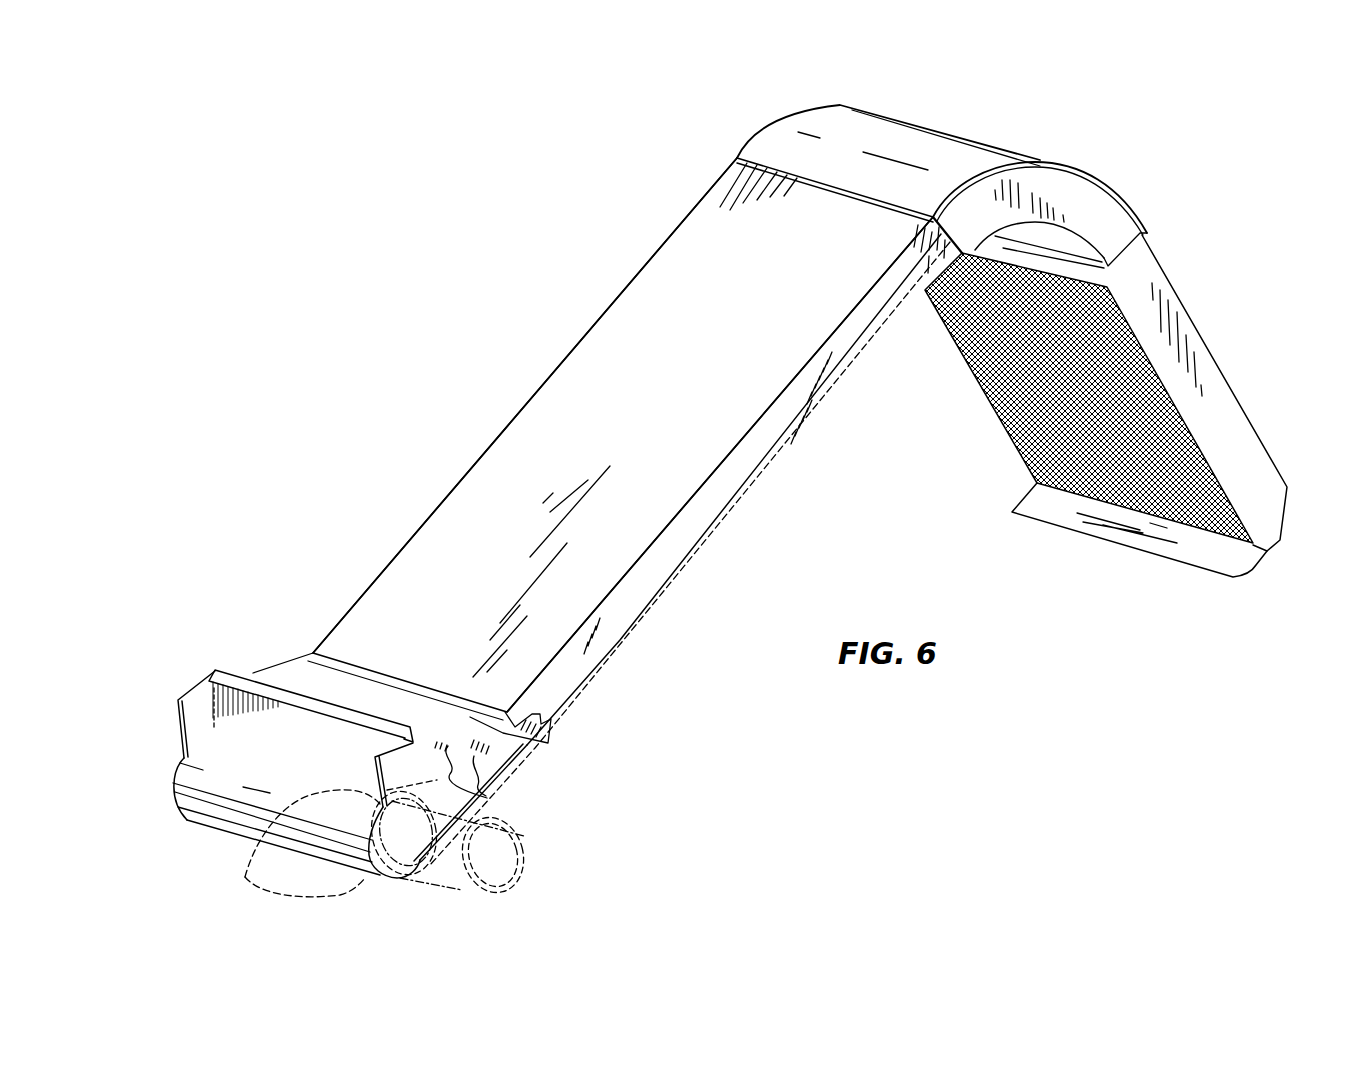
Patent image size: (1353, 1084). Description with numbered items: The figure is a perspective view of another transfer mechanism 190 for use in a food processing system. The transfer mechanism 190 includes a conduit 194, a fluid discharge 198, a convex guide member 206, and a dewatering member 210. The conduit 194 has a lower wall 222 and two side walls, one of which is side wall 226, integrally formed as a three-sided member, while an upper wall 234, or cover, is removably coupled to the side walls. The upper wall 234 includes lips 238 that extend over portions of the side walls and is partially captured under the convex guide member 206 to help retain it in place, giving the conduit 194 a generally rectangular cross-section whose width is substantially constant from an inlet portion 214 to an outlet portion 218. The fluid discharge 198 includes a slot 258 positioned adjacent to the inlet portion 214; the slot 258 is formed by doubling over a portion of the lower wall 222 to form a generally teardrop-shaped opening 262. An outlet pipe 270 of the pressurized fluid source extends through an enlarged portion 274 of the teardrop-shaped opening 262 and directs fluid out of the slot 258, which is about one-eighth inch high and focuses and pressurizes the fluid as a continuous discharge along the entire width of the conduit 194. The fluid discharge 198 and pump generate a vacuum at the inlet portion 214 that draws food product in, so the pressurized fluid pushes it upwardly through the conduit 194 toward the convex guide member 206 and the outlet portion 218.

The transfer mechanism 190 is at (1072, 124).
The conduit 194 is at (606, 340).
The fluid discharge 198 is at (398, 882).
The convex guide member 206 is at (808, 128).
The dewatering member 210 is at (1217, 404).
The inlet portion 214 is at (217, 748).
The outlet portion 218 is at (887, 223).
The lower wall 222 is at (505, 741).
The side wall 226 is at (798, 412).
The upper wall 234 is at (419, 552).
The lip 238 is at (643, 562).
The slot 258 is at (519, 740).
The teardrop-shaped opening 262 is at (295, 843).
The outlet pipe 270 is at (520, 860).
The enlarged portion 274 is at (377, 873).